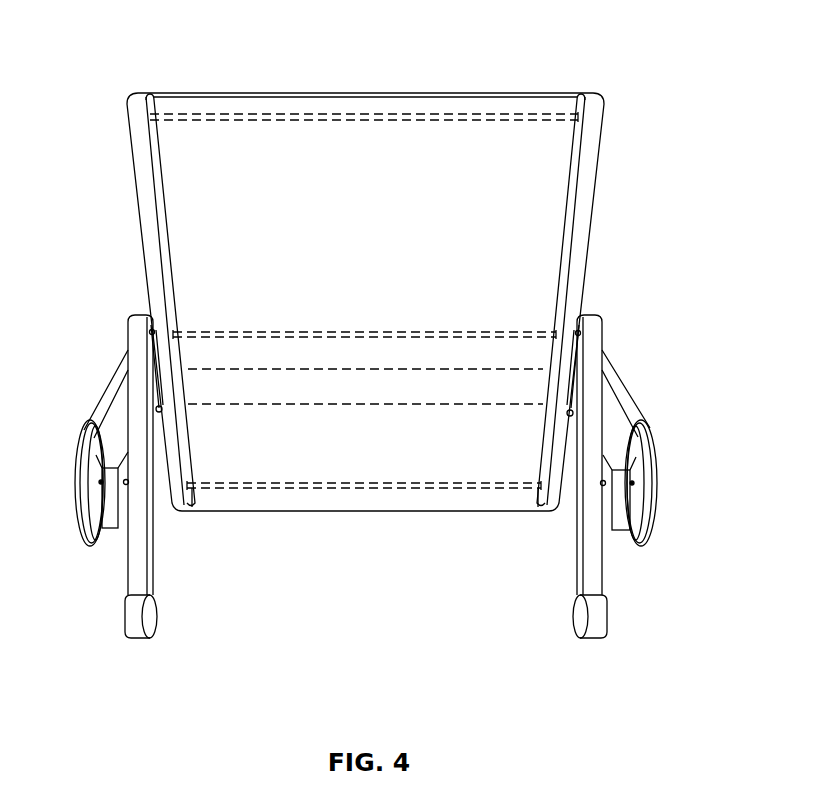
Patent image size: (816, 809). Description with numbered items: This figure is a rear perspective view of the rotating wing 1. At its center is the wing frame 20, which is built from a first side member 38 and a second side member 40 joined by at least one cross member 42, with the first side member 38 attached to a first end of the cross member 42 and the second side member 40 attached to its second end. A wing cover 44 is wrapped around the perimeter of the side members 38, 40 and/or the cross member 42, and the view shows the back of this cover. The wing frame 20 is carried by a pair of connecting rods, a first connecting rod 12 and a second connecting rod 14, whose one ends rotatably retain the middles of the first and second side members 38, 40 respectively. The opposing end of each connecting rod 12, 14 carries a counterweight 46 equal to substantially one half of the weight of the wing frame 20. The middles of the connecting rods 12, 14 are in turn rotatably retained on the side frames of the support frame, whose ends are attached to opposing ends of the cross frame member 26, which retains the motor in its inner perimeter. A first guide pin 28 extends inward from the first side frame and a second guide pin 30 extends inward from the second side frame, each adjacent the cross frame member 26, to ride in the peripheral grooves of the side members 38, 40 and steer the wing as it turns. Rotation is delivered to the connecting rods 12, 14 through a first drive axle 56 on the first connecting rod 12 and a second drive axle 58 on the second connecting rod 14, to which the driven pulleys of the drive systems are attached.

The rotating wing 1 is at (72, 553).
The first connecting rod 12 is at (157, 566).
The second connecting rod 14 is at (603, 562).
The wing frame 20 is at (492, 69).
The cross frame member 26 is at (372, 403).
The first guide pin 28 is at (158, 406).
The second guide pin 30 is at (571, 410).
The first side member 38 is at (127, 146).
The second side member 40 is at (604, 132).
The cross member 42 is at (387, 113).
The wing cover 44 is at (302, 208).
The counterweight 46 is at (138, 640).
The first drive axle 56 is at (603, 484).
The second drive axle 58 is at (128, 484).